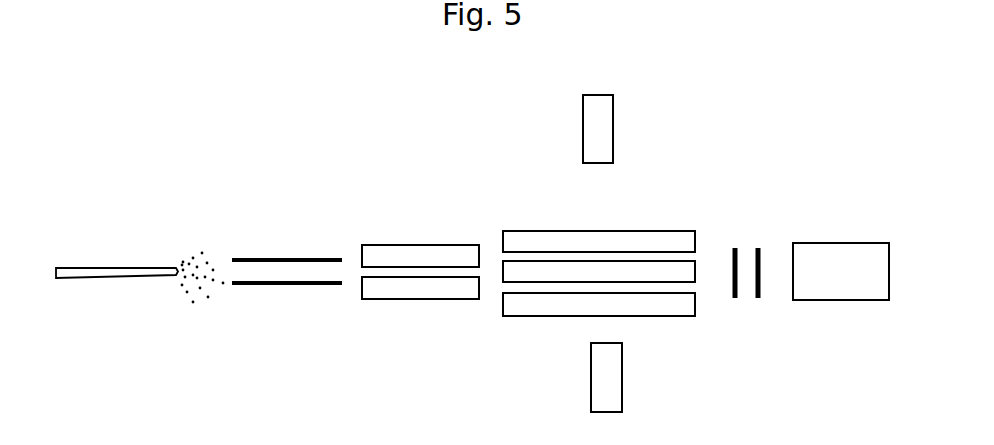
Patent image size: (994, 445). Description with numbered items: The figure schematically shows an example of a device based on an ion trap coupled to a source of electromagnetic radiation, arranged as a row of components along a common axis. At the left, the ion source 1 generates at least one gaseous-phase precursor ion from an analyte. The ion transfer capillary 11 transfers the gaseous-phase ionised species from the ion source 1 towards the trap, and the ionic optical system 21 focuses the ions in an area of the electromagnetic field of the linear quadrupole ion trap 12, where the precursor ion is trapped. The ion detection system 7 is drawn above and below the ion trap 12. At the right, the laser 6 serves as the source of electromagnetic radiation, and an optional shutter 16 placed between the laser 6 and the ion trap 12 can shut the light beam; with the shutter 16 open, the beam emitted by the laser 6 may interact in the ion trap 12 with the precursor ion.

The ion source 1 is at (117, 248).
The ion transfer capillary 11 is at (287, 248).
The ionic optical system 21 is at (420, 251).
The linear quadrupole ion trap 12 is at (599, 252).
The ion detection system 7 is at (618, 252).
The shutter 16 is at (753, 246).
The laser 6 is at (841, 252).